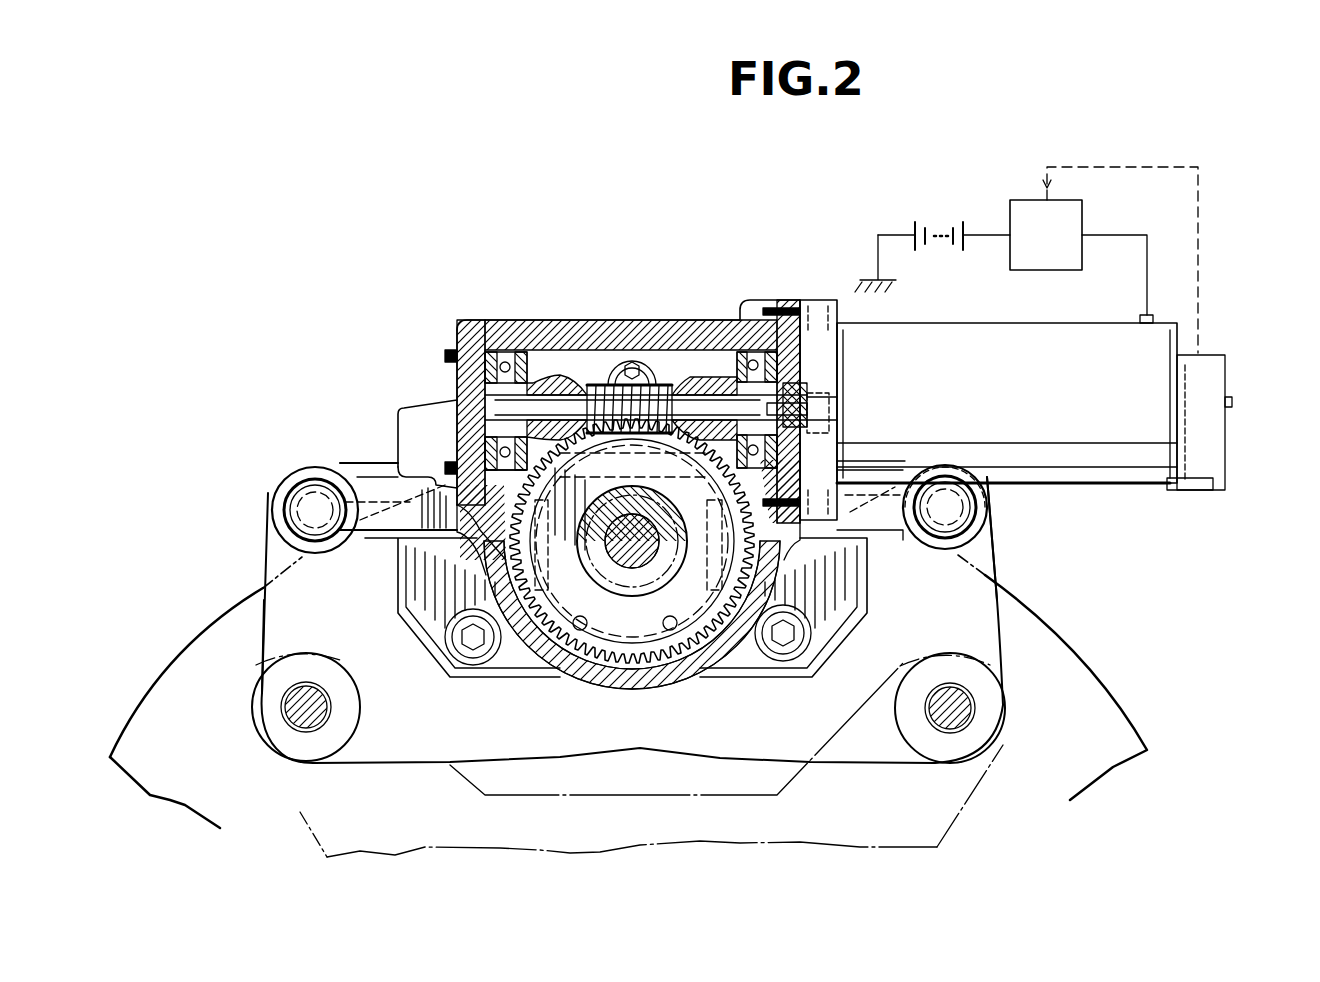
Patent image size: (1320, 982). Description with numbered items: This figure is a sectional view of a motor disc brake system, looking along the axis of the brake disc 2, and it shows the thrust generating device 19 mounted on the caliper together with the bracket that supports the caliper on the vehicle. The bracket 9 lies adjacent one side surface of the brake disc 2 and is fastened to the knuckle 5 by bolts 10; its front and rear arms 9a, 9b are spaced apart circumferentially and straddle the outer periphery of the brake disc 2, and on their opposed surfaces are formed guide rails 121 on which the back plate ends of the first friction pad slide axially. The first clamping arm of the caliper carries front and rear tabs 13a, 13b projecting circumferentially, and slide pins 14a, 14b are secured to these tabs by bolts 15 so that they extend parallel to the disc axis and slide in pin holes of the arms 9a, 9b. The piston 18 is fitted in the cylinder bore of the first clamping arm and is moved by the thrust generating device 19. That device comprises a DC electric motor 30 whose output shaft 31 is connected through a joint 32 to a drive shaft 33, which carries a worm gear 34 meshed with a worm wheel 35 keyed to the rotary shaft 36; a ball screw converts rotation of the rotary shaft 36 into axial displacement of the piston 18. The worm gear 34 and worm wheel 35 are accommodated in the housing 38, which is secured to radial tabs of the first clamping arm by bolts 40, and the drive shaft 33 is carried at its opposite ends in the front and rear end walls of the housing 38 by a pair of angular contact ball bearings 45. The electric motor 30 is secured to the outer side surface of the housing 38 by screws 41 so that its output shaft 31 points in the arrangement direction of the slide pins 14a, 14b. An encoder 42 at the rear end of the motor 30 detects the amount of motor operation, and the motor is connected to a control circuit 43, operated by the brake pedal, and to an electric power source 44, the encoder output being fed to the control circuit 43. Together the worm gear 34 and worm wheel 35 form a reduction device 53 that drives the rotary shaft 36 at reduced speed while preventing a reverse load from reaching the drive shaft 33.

The brake disc 2 is at (1060, 672).
The knuckle 5 is at (960, 812).
The bracket 9 is at (682, 742).
The front arm 9a is at (282, 553).
The rear arm 9b is at (980, 600).
The bolts 10 is at (300, 708).
The guide rails 121 is at (885, 540).
The front tab 13a is at (370, 475).
The rear tab 13b is at (880, 490).
The slide pin 14a is at (296, 464).
The slide pin 14b is at (988, 505).
The bolts 15 is at (273, 496).
The piston 18 is at (535, 660).
The thrust generating device 19 is at (807, 268).
The electric motor 30 is at (1028, 377).
The output shaft 31 is at (815, 413).
The joint 32 is at (795, 403).
The drive shaft 33 is at (695, 405).
The worm gear 34 is at (622, 385).
The worm wheel 35 is at (640, 652).
The rotary shaft 36 is at (630, 560).
The housing 38 is at (479, 320).
The bolts 40 is at (473, 660).
The screws 41 is at (835, 300).
The encoder 42 is at (1215, 378).
The control circuit 43 is at (1062, 254).
The electric power source 44 is at (940, 228).
The angular contact ball bearings 45 is at (506, 362).
The reduction device 53 is at (594, 368).